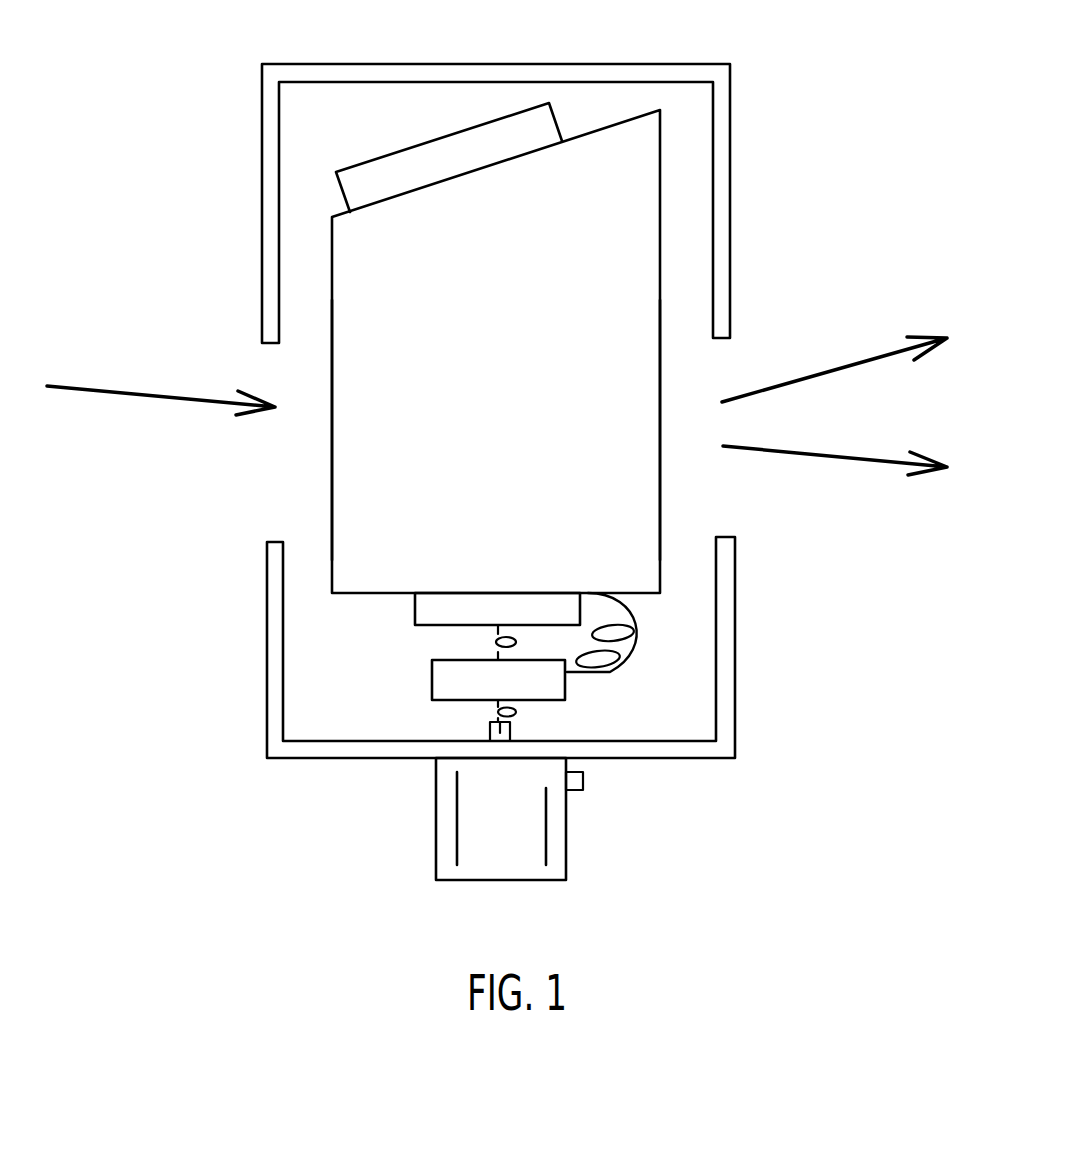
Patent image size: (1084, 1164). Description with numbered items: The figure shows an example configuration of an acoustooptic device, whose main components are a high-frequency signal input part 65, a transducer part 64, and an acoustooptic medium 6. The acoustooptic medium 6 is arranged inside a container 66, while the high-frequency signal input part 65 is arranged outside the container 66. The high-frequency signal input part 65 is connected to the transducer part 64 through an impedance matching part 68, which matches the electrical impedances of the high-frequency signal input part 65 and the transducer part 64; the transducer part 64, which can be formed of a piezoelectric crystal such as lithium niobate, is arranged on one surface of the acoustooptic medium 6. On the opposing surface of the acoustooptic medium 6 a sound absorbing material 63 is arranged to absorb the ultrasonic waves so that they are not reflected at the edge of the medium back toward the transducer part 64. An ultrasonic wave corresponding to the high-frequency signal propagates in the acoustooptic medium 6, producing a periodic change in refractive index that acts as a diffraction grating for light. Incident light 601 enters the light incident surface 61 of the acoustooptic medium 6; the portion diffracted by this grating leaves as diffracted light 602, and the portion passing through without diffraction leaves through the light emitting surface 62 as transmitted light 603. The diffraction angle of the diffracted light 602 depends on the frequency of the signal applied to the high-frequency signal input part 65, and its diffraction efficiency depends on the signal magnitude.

The acoustooptic medium 6 is at (647, 192).
The light incident surface 61 is at (332, 438).
The light emitting surface 62 is at (665, 517).
The sound absorbing material 63 is at (527, 118).
The transducer part 64 is at (415, 609).
The high-frequency signal input part 65 is at (560, 848).
The container 66 is at (733, 97).
The impedance matching part 68 is at (437, 682).
The incident light 601 is at (157, 393).
The diffracted light 602 is at (835, 368).
The transmitted light 603 is at (862, 460).